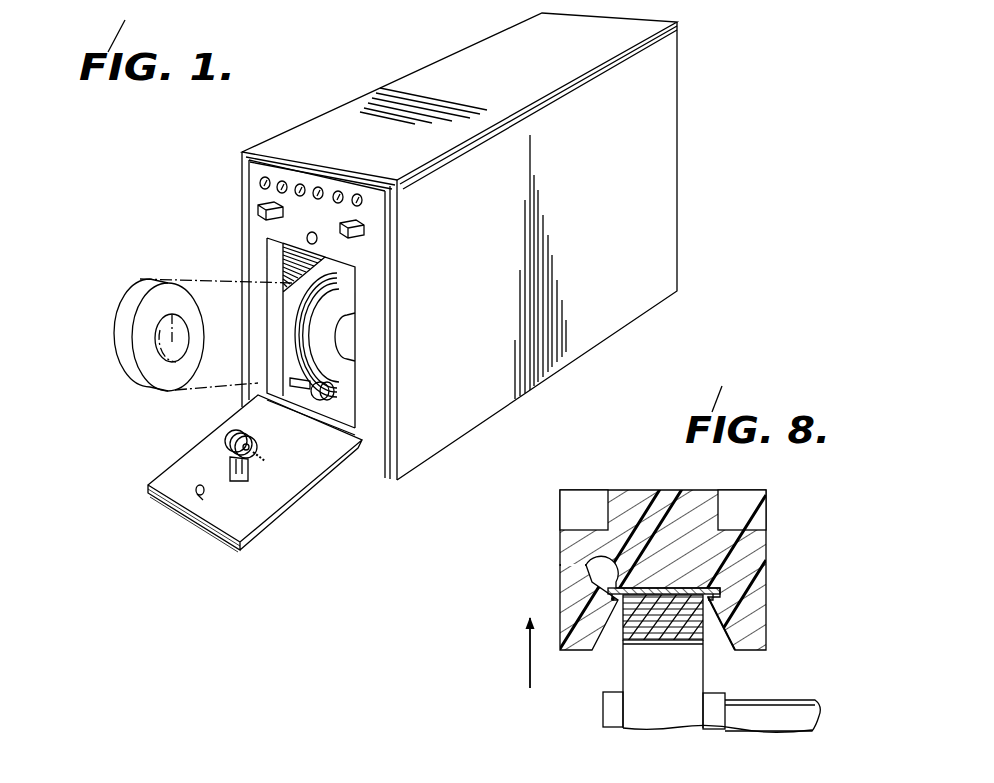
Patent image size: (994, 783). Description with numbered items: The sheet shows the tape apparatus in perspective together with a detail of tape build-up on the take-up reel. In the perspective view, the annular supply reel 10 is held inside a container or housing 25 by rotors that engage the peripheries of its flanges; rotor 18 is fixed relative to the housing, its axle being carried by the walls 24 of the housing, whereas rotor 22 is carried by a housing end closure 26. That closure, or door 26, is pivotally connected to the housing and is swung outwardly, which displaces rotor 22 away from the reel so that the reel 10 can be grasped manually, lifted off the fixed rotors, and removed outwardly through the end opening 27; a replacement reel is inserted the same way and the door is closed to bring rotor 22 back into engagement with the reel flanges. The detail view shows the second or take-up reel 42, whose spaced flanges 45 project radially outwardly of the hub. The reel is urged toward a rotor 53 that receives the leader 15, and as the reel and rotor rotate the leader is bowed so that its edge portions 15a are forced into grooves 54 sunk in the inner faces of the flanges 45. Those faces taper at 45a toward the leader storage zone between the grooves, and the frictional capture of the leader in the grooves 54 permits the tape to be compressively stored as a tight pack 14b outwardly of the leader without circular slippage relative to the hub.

In FIG. 1, the supply reel 10 is at (350, 292).
In FIG. 1, the rotor 18 is at (340, 393).
In FIG. 1, the rotor 22 is at (218, 443).
In FIG. 1, the walls 24 is at (295, 256).
In FIG. 1, the housing 25 is at (387, 75).
In FIG. 1, the housing end closure 26 is at (270, 497).
In FIG. 1, the end opening 27 is at (273, 276).
In FIG. 8, the take-up reel 42 is at (677, 602).
In FIG. 8, the flanges 45 is at (752, 637).
In FIG. 8, the tapered faces 45a is at (731, 640).
In FIG. 8, the leader 15 is at (661, 588).
In FIG. 8, the leader edge portions 15a is at (722, 592).
In FIG. 8, the tape pack 14b is at (703, 618).
In FIG. 8, the rotor 53 is at (626, 703).
In FIG. 8, the grooves 54 is at (575, 565).